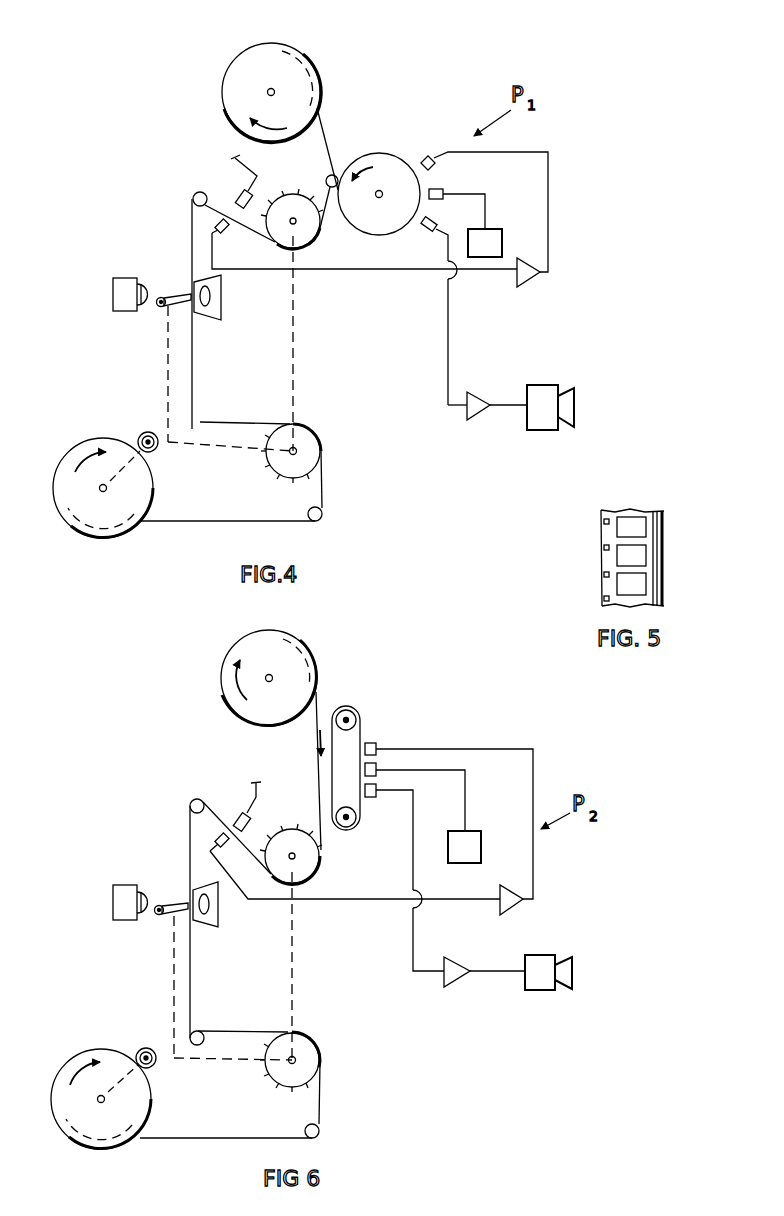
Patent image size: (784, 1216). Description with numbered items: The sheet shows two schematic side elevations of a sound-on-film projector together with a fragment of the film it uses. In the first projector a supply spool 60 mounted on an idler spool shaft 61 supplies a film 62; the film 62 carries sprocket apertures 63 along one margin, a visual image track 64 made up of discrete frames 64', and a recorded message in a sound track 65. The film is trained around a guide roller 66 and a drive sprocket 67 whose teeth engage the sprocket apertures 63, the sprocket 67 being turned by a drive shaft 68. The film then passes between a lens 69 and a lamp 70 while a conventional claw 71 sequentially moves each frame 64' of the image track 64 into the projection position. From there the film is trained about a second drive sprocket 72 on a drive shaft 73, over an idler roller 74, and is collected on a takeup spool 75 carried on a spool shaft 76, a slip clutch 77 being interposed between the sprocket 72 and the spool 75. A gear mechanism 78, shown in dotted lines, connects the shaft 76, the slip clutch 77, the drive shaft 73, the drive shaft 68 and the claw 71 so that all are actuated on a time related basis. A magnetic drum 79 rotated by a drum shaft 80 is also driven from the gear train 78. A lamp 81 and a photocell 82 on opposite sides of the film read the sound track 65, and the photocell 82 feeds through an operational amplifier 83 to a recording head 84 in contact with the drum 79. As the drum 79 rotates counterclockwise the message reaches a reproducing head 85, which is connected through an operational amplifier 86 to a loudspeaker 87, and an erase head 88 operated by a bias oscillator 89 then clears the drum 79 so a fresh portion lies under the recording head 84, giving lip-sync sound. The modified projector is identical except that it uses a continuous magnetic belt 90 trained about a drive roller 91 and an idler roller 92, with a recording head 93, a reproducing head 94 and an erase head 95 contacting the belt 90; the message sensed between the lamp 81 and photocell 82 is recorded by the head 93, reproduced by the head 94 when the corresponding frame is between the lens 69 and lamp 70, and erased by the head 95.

In FIG. 4, the supply spool 60 is at (302, 82).
In FIG. 6, the supply spool 60 is at (248, 698).
In FIG. 4, the idler spool shaft 61 is at (268, 89).
In FIG. 6, the idler spool shaft 61 is at (266, 675).
In FIG. 4, the film 62 is at (190, 224).
In FIG. 5, the film 62 is at (665, 589).
In FIG. 6, the film 62 is at (189, 832).
In FIG. 5, the sprocket apertures 63 is at (605, 576).
In FIG. 5, the visual image track 64 is at (645, 538).
In FIG. 5, the frames 64' is at (628, 506).
In FIG. 5, the sound track 65 is at (658, 553).
In FIG. 4, the guide roller 66 is at (329, 176).
In FIG. 4, the drive sprocket 67 is at (305, 228).
In FIG. 6, the drive sprocket 67 is at (310, 861).
In FIG. 4, the drive shaft 68 is at (292, 216).
In FIG. 6, the drive shaft 68 is at (291, 851).
In FIG. 4, the lens 69 is at (222, 310).
In FIG. 6, the lens 69 is at (205, 927).
In FIG. 4, the lamp 70 is at (145, 311).
In FIG. 6, the lamp 70 is at (144, 920).
In FIG. 4, the claw 71 is at (170, 296).
In FIG. 6, the claw 71 is at (168, 903).
In FIG. 4, the drive sprocket 72 is at (280, 466).
In FIG. 6, the drive sprocket 72 is at (277, 1075).
In FIG. 4, the drive shaft 73 is at (298, 447).
In FIG. 6, the drive shaft 73 is at (297, 1056).
In FIG. 4, the idler roller 74 is at (323, 516).
In FIG. 4, the takeup spool 75 is at (68, 498).
In FIG. 6, the takeup spool 75 is at (70, 1105).
In FIG. 4, the spool shaft 76 is at (90, 478).
In FIG. 6, the spool shaft 76 is at (90, 1085).
In FIG. 4, the slip clutch 77 is at (142, 434).
In FIG. 6, the slip clutch 77 is at (140, 1050).
In FIG. 4, the gear mechanism 78 is at (292, 379).
In FIG. 4, the magnetic drum 79 is at (385, 165).
In FIG. 4, the drum shaft 80 is at (378, 191).
In FIG. 4, the lamp 81 is at (233, 192).
In FIG. 4, the photocell 82 is at (228, 233).
In FIG. 4, the operational amplifier 83 is at (531, 281).
In FIG. 6, the operational amplifier 83 is at (520, 907).
In FIG. 4, the recording head 84 is at (427, 156).
In FIG. 4, the reproducing head 85 is at (424, 230).
In FIG. 4, the operational amplifier 86 is at (475, 413).
In FIG. 6, the operational amplifier 86 is at (452, 982).
In FIG. 4, the loudspeaker 87 is at (540, 420).
In FIG. 6, the loudspeaker 87 is at (538, 978).
In FIG. 4, the erase head 88 is at (440, 189).
In FIG. 4, the bias oscillator 89 is at (490, 232).
In FIG. 6, the bias oscillator 89 is at (475, 851).
In FIG. 6, the continuous magnetic belt 90 is at (350, 707).
In FIG. 6, the drive roller 91 is at (356, 716).
In FIG. 6, the idler roller 92 is at (354, 826).
In FIG. 6, the recording head 93 is at (377, 743).
In FIG. 6, the reproducing head 94 is at (377, 796).
In FIG. 6, the erase head 95 is at (380, 767).